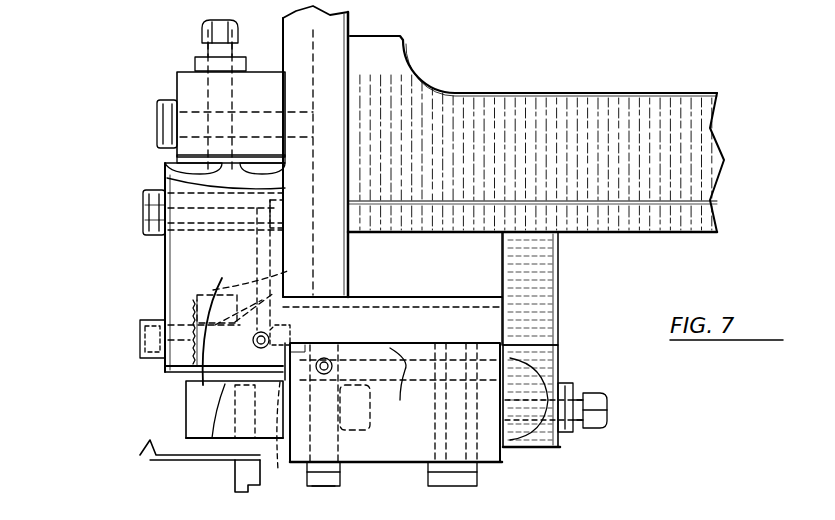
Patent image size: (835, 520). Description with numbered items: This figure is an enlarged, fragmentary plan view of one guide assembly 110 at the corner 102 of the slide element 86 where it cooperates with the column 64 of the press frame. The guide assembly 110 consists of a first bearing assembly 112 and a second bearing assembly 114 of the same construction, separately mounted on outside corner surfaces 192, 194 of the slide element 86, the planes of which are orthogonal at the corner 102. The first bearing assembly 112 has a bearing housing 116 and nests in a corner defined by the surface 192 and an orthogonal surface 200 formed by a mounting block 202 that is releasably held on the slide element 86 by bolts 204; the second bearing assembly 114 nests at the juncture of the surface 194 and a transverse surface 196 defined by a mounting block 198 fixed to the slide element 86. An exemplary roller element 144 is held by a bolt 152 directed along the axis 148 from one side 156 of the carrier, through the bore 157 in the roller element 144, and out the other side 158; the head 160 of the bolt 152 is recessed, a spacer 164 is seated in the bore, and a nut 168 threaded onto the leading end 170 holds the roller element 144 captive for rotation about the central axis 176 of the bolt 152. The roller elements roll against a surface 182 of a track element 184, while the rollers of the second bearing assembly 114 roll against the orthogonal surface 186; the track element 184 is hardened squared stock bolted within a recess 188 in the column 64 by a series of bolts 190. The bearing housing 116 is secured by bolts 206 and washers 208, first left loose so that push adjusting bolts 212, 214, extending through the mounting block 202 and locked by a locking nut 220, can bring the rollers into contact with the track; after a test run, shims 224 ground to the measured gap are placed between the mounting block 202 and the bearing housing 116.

The column 64 is at (178, 458).
The slide element 86 is at (598, 125).
The corner 102 is at (348, 292).
The guide assembly 110 is at (110, 405).
The first bearing assembly 112 is at (160, 272).
The second bearing assembly 114 is at (432, 466).
The bearing housing 116 is at (192, 238).
The roller element 144 is at (222, 476).
The axis 148 is at (140, 338).
The bolt 152 is at (140, 345).
The side of carrier 156 is at (448, 180).
The bore 157 is at (290, 300).
The other side of carrier 158 is at (165, 297).
The head of bolt 160 is at (275, 330).
The spacer 164 is at (152, 380).
The nut 168 is at (165, 360).
The leading end of bolt 170 is at (140, 330).
The central axis of bolt 176 is at (186, 406).
The track surface 182 is at (246, 318).
The track element 184 is at (150, 420).
The orthogonal surface 186 is at (350, 465).
The recess 188 is at (200, 425).
The bolts 190 is at (287, 448).
The outside corner surface 192 is at (170, 180).
The outside corner surface 194 is at (405, 387).
The transverse surface 196 is at (505, 450).
The mounting block 198 is at (540, 312).
The orthogonal surface 200 is at (172, 165).
The mounting block 202 is at (197, 95).
The bolts 204 is at (157, 122).
The bolts 206 is at (143, 205).
The washers 208 is at (165, 238).
The push adjusting bolt 212 is at (125, 518).
The push adjusting bolt 214 is at (345, 519).
The locking nut 220 is at (205, 510).
The shims 224 is at (565, 440).